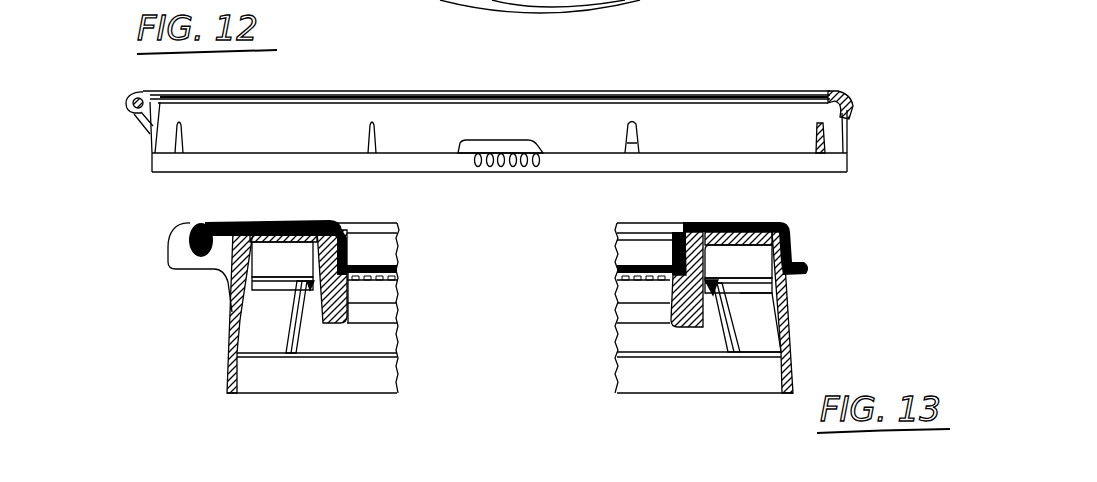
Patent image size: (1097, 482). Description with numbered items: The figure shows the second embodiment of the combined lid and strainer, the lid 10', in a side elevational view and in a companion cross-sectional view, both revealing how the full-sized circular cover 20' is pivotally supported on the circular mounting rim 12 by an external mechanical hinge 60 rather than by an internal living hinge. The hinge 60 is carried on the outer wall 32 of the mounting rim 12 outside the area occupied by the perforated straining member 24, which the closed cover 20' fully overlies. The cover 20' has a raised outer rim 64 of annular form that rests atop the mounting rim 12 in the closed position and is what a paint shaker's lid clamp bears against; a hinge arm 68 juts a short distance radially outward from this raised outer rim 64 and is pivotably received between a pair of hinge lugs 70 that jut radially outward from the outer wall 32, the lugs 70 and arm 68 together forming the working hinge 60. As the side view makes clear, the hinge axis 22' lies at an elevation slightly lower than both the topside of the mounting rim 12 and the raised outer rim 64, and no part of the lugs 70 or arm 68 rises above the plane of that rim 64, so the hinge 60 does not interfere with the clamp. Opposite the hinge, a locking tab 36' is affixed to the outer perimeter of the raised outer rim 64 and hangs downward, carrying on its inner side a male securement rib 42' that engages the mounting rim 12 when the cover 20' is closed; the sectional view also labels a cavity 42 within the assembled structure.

In FIG. 12, the lid 10' is at (478, 111).
In FIG. 12, the mounting rim 12 is at (849, 170).
In FIG. 13, the mounting rim 12 is at (228, 341).
In FIG. 12, the cover 20' is at (486, 63).
In FIG. 13, the cover 20' is at (276, 225).
In FIG. 12, the hinge axis 22' is at (126, 141).
In FIG. 13, the straining member 24 is at (381, 291).
In FIG. 12, the outer wall 32 is at (837, 143).
In FIG. 12, the locking tab 36' is at (861, 89).
In FIG. 13, the locking tab 36' is at (768, 237).
In FIG. 13, the cavity 42 is at (760, 305).
In FIG. 12, the male securement rib 42' is at (783, 156).
In FIG. 12, the mechanical hinge 60 is at (130, 97).
In FIG. 13, the mechanical hinge 60 is at (169, 274).
In FIG. 12, the raised outer rim 64 is at (810, 92).
In FIG. 13, the hinge arm 68 is at (224, 221).
In FIG. 12, the hinge lugs 70 is at (123, 105).
In FIG. 13, the hinge lugs 70 is at (206, 269).